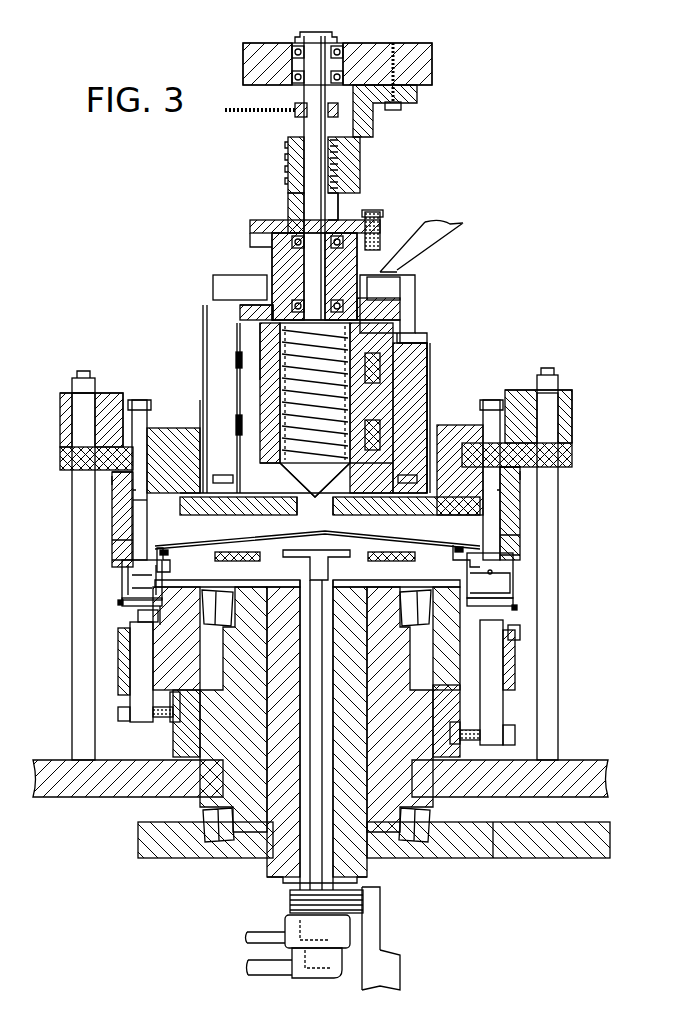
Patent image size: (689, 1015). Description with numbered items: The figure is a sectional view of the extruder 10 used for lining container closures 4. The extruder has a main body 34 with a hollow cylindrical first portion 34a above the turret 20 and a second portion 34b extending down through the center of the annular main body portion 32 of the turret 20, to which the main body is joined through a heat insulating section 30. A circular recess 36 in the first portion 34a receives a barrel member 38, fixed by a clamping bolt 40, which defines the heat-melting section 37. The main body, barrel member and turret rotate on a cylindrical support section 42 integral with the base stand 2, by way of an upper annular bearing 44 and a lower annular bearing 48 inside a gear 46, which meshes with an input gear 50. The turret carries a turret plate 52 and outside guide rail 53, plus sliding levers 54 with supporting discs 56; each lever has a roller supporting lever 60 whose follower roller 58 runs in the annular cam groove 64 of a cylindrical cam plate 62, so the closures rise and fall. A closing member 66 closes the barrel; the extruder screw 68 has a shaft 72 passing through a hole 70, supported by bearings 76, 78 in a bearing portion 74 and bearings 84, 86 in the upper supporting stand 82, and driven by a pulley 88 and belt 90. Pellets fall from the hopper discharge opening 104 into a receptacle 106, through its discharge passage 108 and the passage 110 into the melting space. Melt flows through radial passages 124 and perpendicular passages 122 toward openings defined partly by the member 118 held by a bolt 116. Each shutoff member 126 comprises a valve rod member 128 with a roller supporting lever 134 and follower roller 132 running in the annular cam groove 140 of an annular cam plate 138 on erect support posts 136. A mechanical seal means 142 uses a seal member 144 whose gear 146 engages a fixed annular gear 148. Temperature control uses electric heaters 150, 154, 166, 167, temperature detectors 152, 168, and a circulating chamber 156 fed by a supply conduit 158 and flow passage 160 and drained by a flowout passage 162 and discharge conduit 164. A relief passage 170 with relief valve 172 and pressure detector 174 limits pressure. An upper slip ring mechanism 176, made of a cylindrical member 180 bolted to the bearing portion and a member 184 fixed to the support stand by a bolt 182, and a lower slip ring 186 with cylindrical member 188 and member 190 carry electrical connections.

The base stand 2 is at (58, 797).
The container closure 4 is at (122, 601).
The extruder 10 is at (484, 316).
The turret 20 is at (92, 676).
The heat insulating section 30 is at (358, 547).
The main body portion of the turret 32 is at (180, 650).
The main body of the extruder 34 is at (133, 516).
The first portion of the main body 34a is at (112, 491).
The second portion of the main body 34b is at (398, 661).
The circular recess 36 is at (200, 414).
The heat-melting section 37 is at (400, 397).
The barrel member 38 is at (240, 416).
The clamping bolt 40 is at (222, 475).
The cylindrical support section 42 is at (232, 698).
The upper annular bearing 44 is at (212, 626).
The gear 46 is at (480, 858).
The lower annular bearing 48 is at (205, 822).
The input gear 50 is at (553, 858).
The turret plate 52 is at (130, 648).
The outside guide rail 53 is at (118, 603).
The sliding lever 54 is at (135, 691).
The supporting disc 56 is at (140, 613).
The follower roller 58 is at (175, 719).
The roller supporting lever 60 is at (145, 722).
The cylindrical cam plate 62 is at (190, 701).
The annular cam groove 64 is at (176, 692).
The closing member 66 is at (244, 300).
The extruder screw 68 is at (300, 401).
The hole 70 is at (252, 224).
The shaft 72 is at (298, 162).
The bearing portion 74 is at (375, 243).
The bearing 76 is at (290, 220).
The bearing 78 is at (272, 260).
The upper supporting stand 82 is at (420, 43).
The bearing 84 is at (337, 40).
The bearing 86 is at (296, 83).
The pulley 88 is at (296, 115).
The belt 90 is at (250, 108).
The discharge opening 104 is at (440, 228).
The receptacle 106 is at (415, 283).
The discharge passage 108 is at (402, 300).
The passage 110 is at (410, 335).
The bolt 116 is at (122, 582).
The circular-cylindrical member 118 is at (168, 620).
The perpendicular passage 122 is at (112, 541).
The radial passage 124 is at (216, 534).
The shutoff member 126 is at (106, 529).
The valve rod member 128 is at (112, 501).
The follower roller 132 is at (130, 400).
The roller supporting lever 134 is at (135, 400).
The erect support post 136 is at (72, 724).
The annular cam plate 138 is at (66, 391).
The annular cam groove 140 is at (62, 409).
The mechanical seal means 142 is at (112, 481).
The seal member 144 is at (112, 473).
The gear 146 is at (160, 428).
The annular gear 148 is at (60, 452).
The electric heater 150 is at (382, 367).
The temperature detector 152 is at (206, 410).
The electric heater 154 is at (203, 440).
The heat transfer medium circulating chamber 156 is at (353, 552).
The supply conduit 158 is at (250, 965).
The flow passage 160 is at (302, 784).
The flowout passage 162 is at (304, 742).
The discharge conduit 164 is at (250, 935).
The electric heater 166 is at (253, 552).
The electric heater 167 is at (112, 561).
The temperature detector 168 is at (165, 548).
The relief passage 170 is at (240, 434).
The relief valve 172 is at (262, 340).
The pressure detector 174 is at (262, 350).
The slip ring mechanism 176 is at (365, 162).
The cylindrical member 180 is at (340, 205).
The bolt 182 is at (394, 110).
The member 184 is at (361, 148).
The slip ring 186 is at (390, 906).
The cylindrical member 188 is at (290, 900).
The member 190 is at (395, 962).